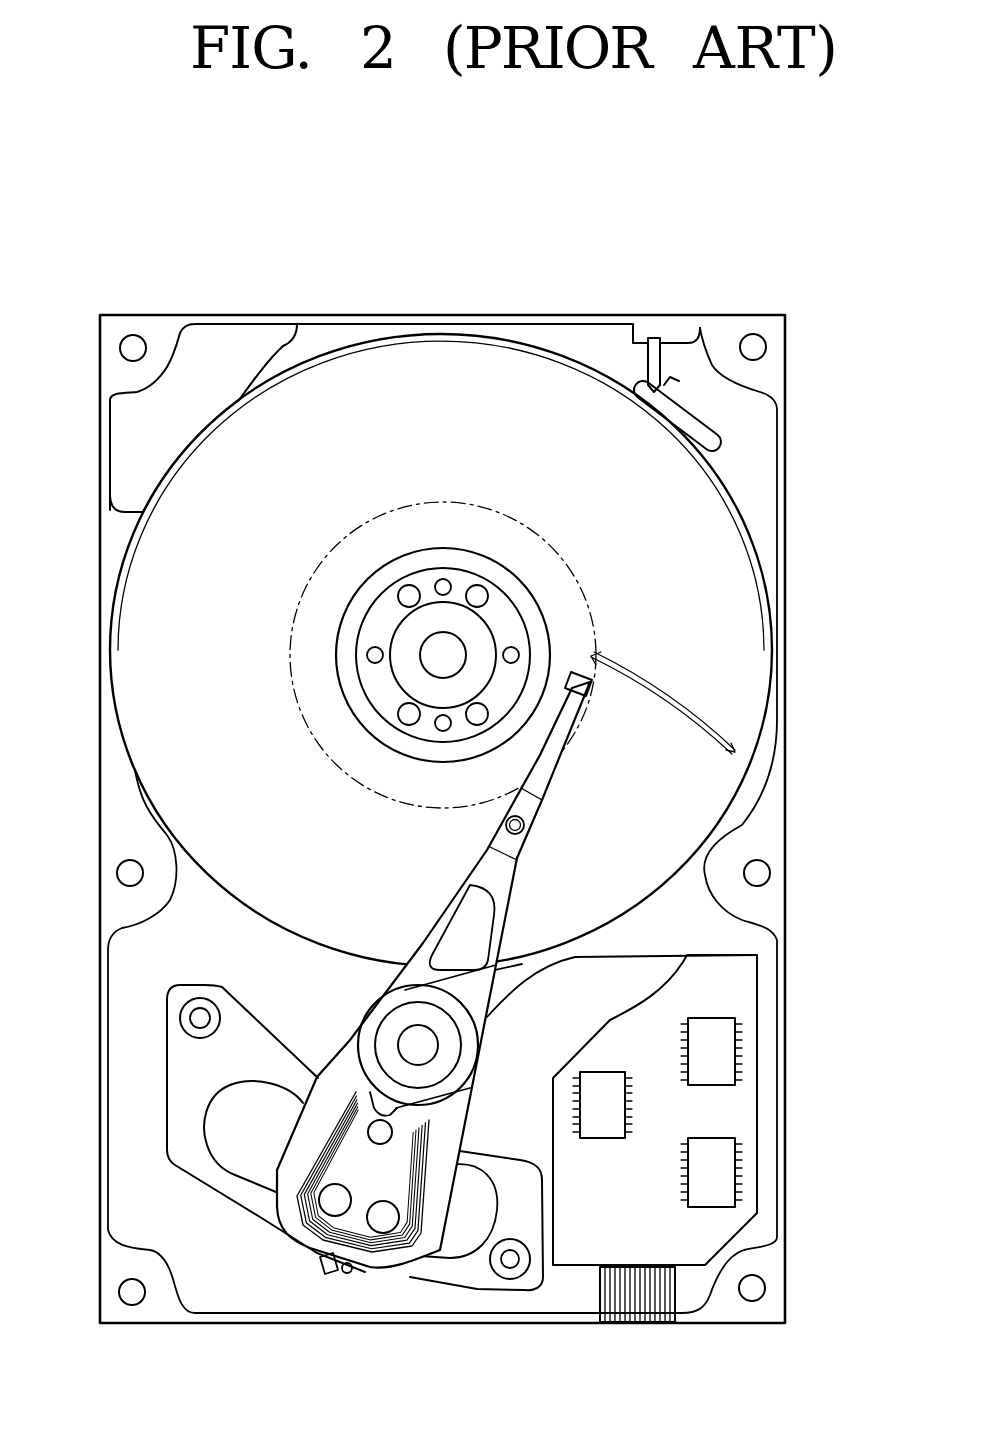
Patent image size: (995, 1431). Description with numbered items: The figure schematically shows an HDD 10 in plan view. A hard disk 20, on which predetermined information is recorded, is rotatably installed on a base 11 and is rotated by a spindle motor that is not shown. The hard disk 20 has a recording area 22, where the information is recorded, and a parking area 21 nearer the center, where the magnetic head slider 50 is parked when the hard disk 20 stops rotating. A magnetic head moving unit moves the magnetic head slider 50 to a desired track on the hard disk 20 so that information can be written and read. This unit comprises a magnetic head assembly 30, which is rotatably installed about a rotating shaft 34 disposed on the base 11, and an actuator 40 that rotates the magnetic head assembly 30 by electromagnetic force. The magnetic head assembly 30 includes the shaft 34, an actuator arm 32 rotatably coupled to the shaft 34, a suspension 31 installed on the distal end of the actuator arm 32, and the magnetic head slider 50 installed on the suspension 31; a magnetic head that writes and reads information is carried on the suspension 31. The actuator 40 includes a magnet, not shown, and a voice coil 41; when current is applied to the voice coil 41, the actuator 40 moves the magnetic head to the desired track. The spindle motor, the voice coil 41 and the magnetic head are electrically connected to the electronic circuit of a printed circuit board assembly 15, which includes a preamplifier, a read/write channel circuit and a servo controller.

The hard disk drive 10 is at (775, 283).
The base 11 is at (765, 1010).
The printed circuit board assembly 15 is at (735, 972).
The hard disk 20 is at (744, 522).
The parking area 21 is at (290, 655).
The recording area 22 is at (290, 668).
The magnetic head assembly 30 is at (459, 970).
The suspension 31 is at (548, 788).
The actuator arm 32 is at (518, 908).
The rotating shaft 34 is at (412, 1040).
The actuator 40 is at (154, 1061).
The voice coil 41 is at (400, 1245).
The magnetic head slider 50 is at (590, 682).